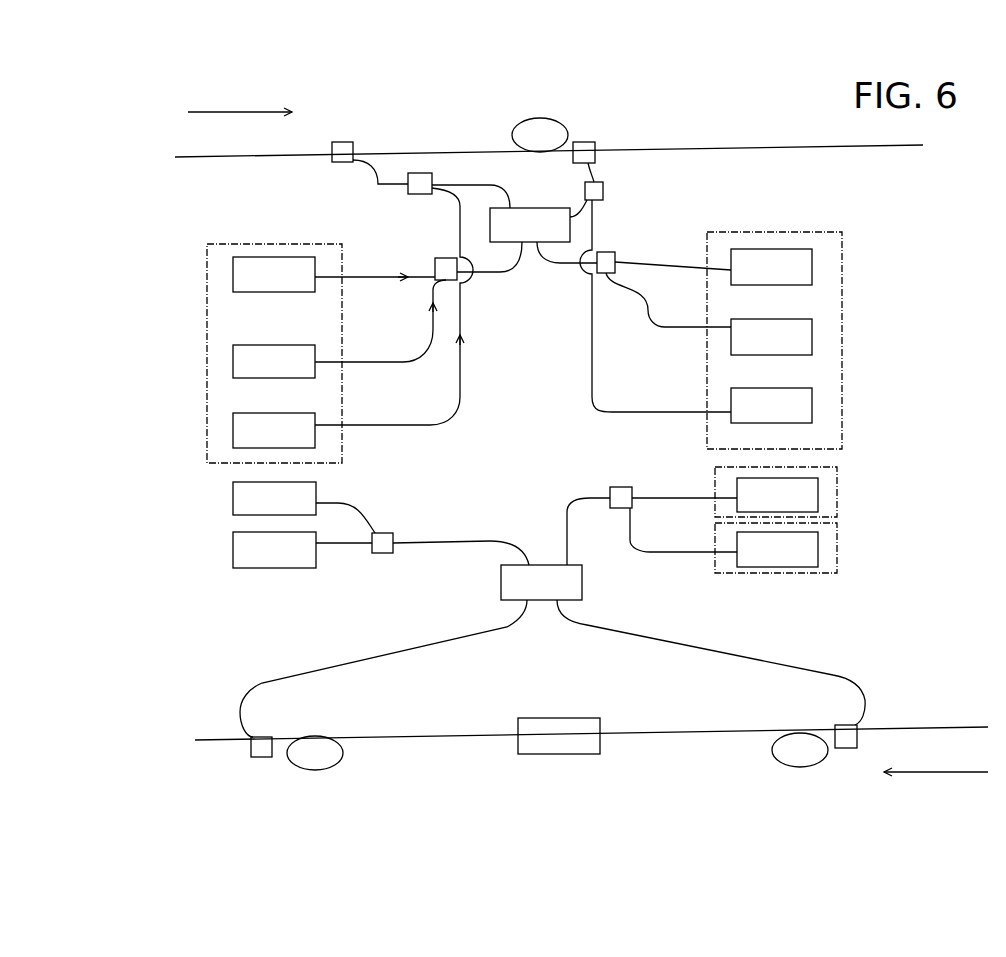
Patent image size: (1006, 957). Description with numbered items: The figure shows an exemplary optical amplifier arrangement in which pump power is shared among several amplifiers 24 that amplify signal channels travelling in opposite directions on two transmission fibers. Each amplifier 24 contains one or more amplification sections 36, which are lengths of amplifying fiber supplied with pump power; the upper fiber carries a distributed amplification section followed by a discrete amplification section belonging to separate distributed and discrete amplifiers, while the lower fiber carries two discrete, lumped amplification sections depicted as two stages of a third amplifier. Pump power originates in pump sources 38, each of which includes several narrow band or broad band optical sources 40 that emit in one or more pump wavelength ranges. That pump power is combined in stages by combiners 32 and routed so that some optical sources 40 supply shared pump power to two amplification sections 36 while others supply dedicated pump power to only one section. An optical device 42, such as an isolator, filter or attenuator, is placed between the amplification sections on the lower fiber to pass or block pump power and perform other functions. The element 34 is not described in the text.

The optical amplifier 24 is at (302, 79).
The combiner 32 is at (336, 180).
The optical combiner/splitter 34 is at (537, 208).
The amplification section 36 is at (755, 803).
The pump source 38 is at (967, 485).
The optical source 40 is at (857, 543).
The optical device 42 is at (542, 754).